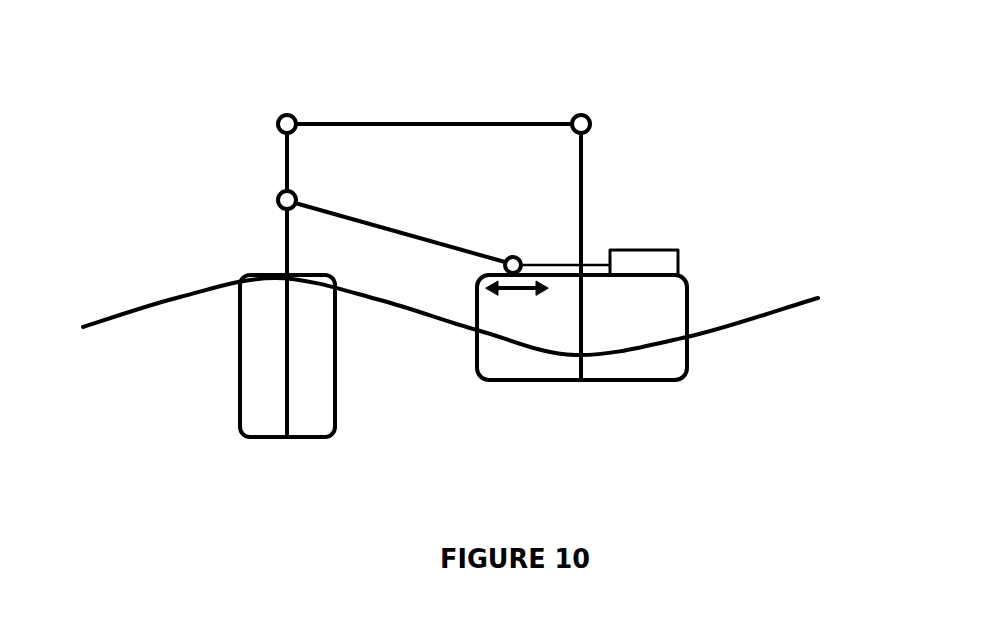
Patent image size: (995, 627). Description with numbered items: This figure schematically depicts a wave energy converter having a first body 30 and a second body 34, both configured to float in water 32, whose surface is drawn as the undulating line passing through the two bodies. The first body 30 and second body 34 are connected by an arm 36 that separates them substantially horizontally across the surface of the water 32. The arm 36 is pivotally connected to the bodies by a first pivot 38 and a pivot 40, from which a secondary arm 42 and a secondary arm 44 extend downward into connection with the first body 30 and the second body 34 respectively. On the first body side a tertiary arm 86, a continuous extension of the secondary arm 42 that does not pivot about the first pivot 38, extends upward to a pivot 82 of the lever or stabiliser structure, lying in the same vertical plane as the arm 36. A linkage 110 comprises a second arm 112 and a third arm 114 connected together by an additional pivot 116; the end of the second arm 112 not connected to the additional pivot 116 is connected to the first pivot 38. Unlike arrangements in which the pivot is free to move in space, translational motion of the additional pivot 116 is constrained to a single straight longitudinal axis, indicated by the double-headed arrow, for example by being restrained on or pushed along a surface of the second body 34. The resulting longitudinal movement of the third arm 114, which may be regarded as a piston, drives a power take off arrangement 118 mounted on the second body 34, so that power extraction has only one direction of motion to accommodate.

The first body 30 is at (250, 417).
The water 32 is at (770, 332).
The second body 34 is at (505, 370).
The arm 36 is at (438, 118).
The first pivot 38 is at (267, 202).
The pivot 40 is at (583, 112).
The secondary arm 42 is at (283, 250).
The secondary arm 44 is at (587, 155).
The pivot 82 is at (297, 115).
The tertiary arm 86 is at (272, 153).
The linkage 110 is at (489, 214).
The second arm 112 is at (358, 212).
The third arm 114 is at (547, 257).
The additional pivot 116 is at (487, 265).
The power take off arrangement 118 is at (670, 267).